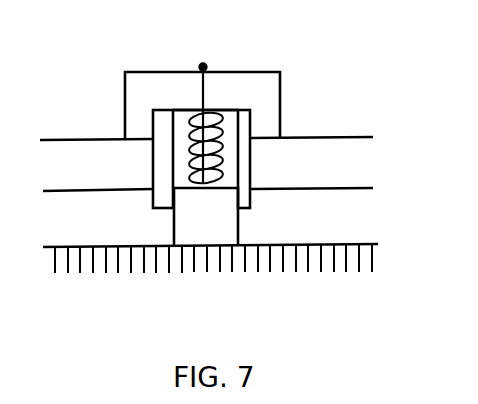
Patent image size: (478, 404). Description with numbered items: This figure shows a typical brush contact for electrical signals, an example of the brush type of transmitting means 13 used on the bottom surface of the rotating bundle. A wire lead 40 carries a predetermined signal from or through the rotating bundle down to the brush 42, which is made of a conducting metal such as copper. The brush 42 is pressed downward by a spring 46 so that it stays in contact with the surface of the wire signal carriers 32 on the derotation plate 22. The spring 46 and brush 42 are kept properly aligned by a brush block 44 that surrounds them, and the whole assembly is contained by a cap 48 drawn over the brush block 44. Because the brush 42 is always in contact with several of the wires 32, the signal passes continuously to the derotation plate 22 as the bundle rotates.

The transmitting means 13 is at (132, 27).
The wire lead 40 is at (204, 64).
The cap 48 is at (137, 108).
The spring 46 is at (223, 147).
The brush block 44 is at (246, 173).
The brush 42 is at (228, 235).
The derotation plate 22 is at (378, 244).
The wire signal carriers 32 is at (366, 266).